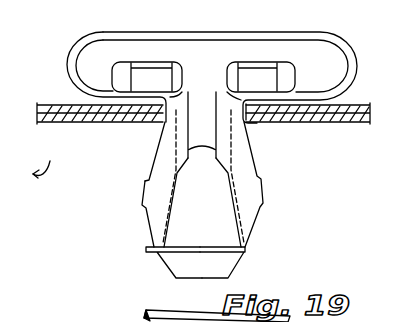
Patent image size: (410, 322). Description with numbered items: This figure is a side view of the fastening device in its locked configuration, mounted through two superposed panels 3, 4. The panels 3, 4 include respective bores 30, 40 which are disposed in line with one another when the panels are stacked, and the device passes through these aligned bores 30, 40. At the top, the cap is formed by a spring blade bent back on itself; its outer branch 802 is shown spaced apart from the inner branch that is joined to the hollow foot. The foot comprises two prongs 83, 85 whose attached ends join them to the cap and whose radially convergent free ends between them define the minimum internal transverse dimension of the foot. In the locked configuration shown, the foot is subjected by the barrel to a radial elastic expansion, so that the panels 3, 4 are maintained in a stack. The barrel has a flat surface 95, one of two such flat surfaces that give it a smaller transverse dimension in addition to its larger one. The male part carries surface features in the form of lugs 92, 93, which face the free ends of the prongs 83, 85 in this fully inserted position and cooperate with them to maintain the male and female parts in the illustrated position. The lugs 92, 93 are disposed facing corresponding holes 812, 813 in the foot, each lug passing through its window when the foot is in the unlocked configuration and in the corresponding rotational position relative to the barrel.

The outer branch 802 is at (140, 32).
The panel 3 is at (60, 105).
The panel 4 is at (37, 160).
The bore 30 is at (248, 108).
The bore 40 is at (262, 122).
The prong 83 is at (207, 185).
The prong 85 is at (157, 142).
The hole 812 is at (262, 198).
The hole 813 is at (145, 195).
The flat surface 95 is at (203, 176).
The lug 92 is at (247, 249).
The lug 93 is at (147, 249).